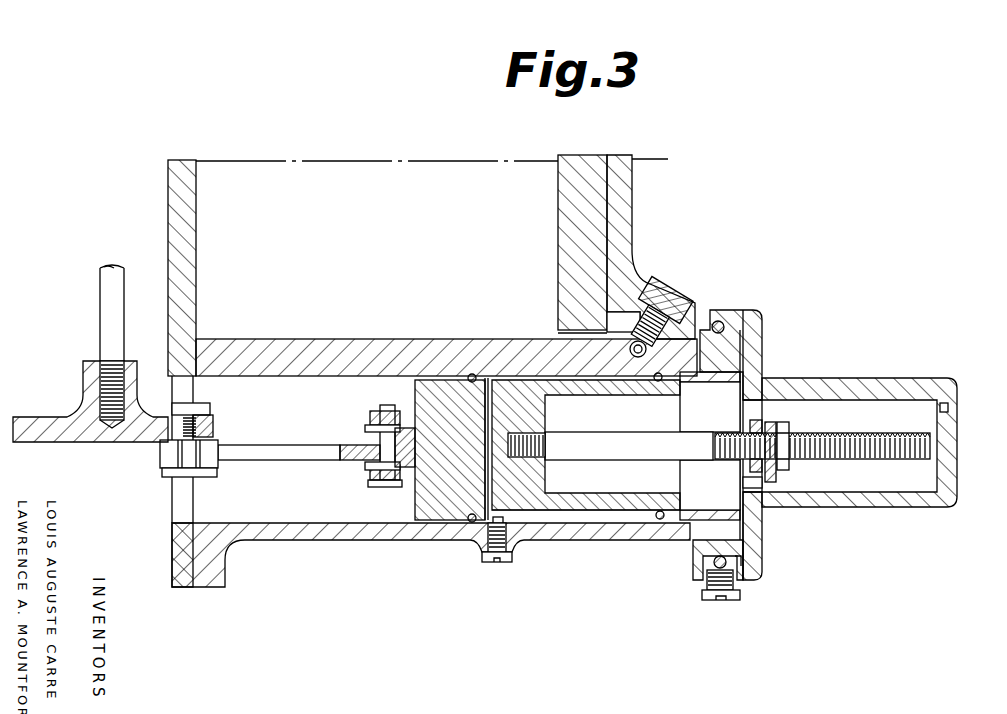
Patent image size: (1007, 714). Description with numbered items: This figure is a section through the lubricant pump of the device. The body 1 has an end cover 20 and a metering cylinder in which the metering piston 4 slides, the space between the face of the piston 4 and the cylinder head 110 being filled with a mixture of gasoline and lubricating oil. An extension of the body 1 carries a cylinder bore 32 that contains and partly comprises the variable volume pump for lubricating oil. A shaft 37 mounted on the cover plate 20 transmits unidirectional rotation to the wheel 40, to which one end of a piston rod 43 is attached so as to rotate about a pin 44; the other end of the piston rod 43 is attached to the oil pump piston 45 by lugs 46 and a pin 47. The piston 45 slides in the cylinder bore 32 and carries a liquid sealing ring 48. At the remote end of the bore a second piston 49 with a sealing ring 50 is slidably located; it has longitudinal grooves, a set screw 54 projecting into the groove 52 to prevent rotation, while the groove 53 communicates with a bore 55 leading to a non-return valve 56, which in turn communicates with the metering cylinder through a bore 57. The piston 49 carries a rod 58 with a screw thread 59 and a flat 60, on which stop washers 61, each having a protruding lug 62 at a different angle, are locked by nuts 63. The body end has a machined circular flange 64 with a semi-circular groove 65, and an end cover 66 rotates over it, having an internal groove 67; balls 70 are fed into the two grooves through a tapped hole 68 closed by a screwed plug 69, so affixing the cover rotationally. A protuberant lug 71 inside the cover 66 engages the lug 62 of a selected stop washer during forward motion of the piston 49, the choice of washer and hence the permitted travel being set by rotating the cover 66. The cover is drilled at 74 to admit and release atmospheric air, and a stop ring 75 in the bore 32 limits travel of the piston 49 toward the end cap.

The body 1 is at (550, 348).
The piston 4 is at (560, 202).
The end cover 20 is at (182, 174).
The cylinder bore 32 is at (272, 526).
The shaft 37 is at (104, 292).
The wheel 40 is at (80, 437).
The piston rod 43 is at (263, 448).
The pin 44 is at (168, 470).
The oil pump piston 45 is at (450, 484).
The lugs 46 is at (368, 437).
The pin 47 is at (384, 489).
The liquid sealing ring 48 is at (470, 374).
The piston 49 is at (513, 412).
The liquid sealing ring 50 is at (657, 383).
The groove 52 is at (597, 512).
The groove 53 is at (510, 383).
The set screw 54 is at (500, 563).
The bore 55 is at (636, 357).
The non-return valve 56 is at (660, 300).
The bore 57 is at (624, 322).
The rod 58 is at (608, 452).
The screw thread 59 is at (912, 462).
The flat 60 is at (897, 426).
The stop washers 61 is at (770, 424).
The lug 62 is at (778, 479).
The nuts 63 is at (783, 422).
The circular flange 64 is at (694, 550).
The groove 65 is at (744, 536).
The end cover 66 is at (860, 382).
The groove 67 is at (701, 585).
The tapped hole 68 is at (740, 583).
The screwed plug 69 is at (738, 599).
The balls 70 is at (722, 321).
The protuberant lug 71 is at (752, 482).
The drilled hole 74 is at (949, 408).
The stop ring 75 is at (694, 491).
The cylinder head 110 is at (627, 196).